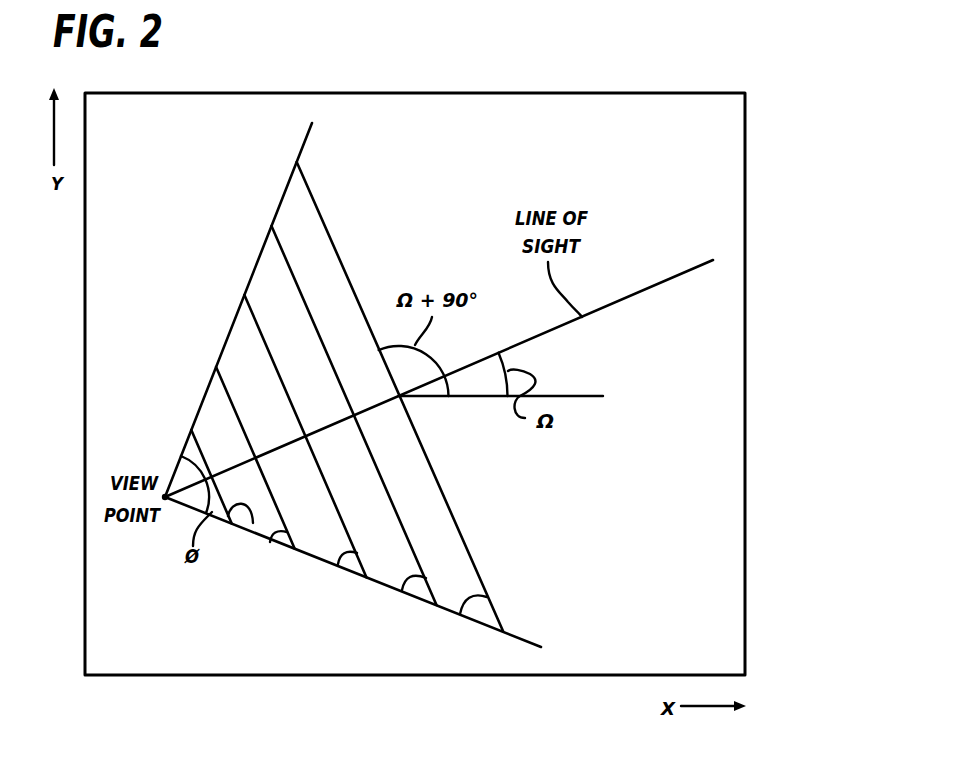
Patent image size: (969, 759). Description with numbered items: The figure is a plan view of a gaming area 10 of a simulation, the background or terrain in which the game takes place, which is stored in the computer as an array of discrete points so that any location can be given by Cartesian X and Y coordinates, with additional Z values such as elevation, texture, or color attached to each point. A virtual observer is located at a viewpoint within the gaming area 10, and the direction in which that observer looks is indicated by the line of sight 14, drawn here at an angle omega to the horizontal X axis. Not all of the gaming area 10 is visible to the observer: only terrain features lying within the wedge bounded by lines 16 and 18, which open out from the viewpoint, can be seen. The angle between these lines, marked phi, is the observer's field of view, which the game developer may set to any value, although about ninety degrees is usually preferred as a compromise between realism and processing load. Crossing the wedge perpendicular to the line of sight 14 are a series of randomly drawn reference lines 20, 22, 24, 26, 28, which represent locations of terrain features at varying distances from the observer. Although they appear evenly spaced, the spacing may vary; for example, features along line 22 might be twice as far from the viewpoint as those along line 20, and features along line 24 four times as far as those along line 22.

The gaming area 10 is at (664, 72).
The line of sight 14 is at (670, 272).
The field-of-view boundary line 16 is at (255, 243).
The field-of-view boundary line 18 is at (520, 634).
The reference line 20 is at (253, 524).
The reference line 22 is at (270, 543).
The reference line 24 is at (338, 564).
The reference line 26 is at (402, 590).
The reference line 28 is at (460, 614).